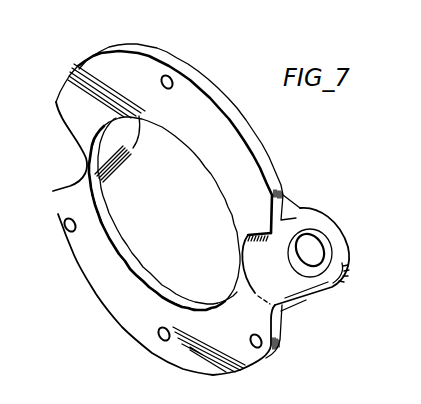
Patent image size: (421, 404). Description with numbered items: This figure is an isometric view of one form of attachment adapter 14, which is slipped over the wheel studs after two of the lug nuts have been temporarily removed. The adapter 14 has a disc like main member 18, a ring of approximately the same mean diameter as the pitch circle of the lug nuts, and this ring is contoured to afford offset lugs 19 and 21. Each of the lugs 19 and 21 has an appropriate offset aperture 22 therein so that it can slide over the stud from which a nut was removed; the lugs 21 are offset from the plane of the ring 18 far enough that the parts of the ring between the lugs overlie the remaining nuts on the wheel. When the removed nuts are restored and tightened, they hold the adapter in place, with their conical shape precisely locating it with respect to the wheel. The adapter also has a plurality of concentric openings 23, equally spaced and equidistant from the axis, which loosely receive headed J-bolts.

The adapter 14 is at (260, 177).
The disc like main member 18 is at (138, 297).
The offset lug 19 is at (120, 149).
The offset lug 21 is at (353, 265).
The offset aperture 22 is at (307, 247).
The concentric opening 23 is at (170, 76).